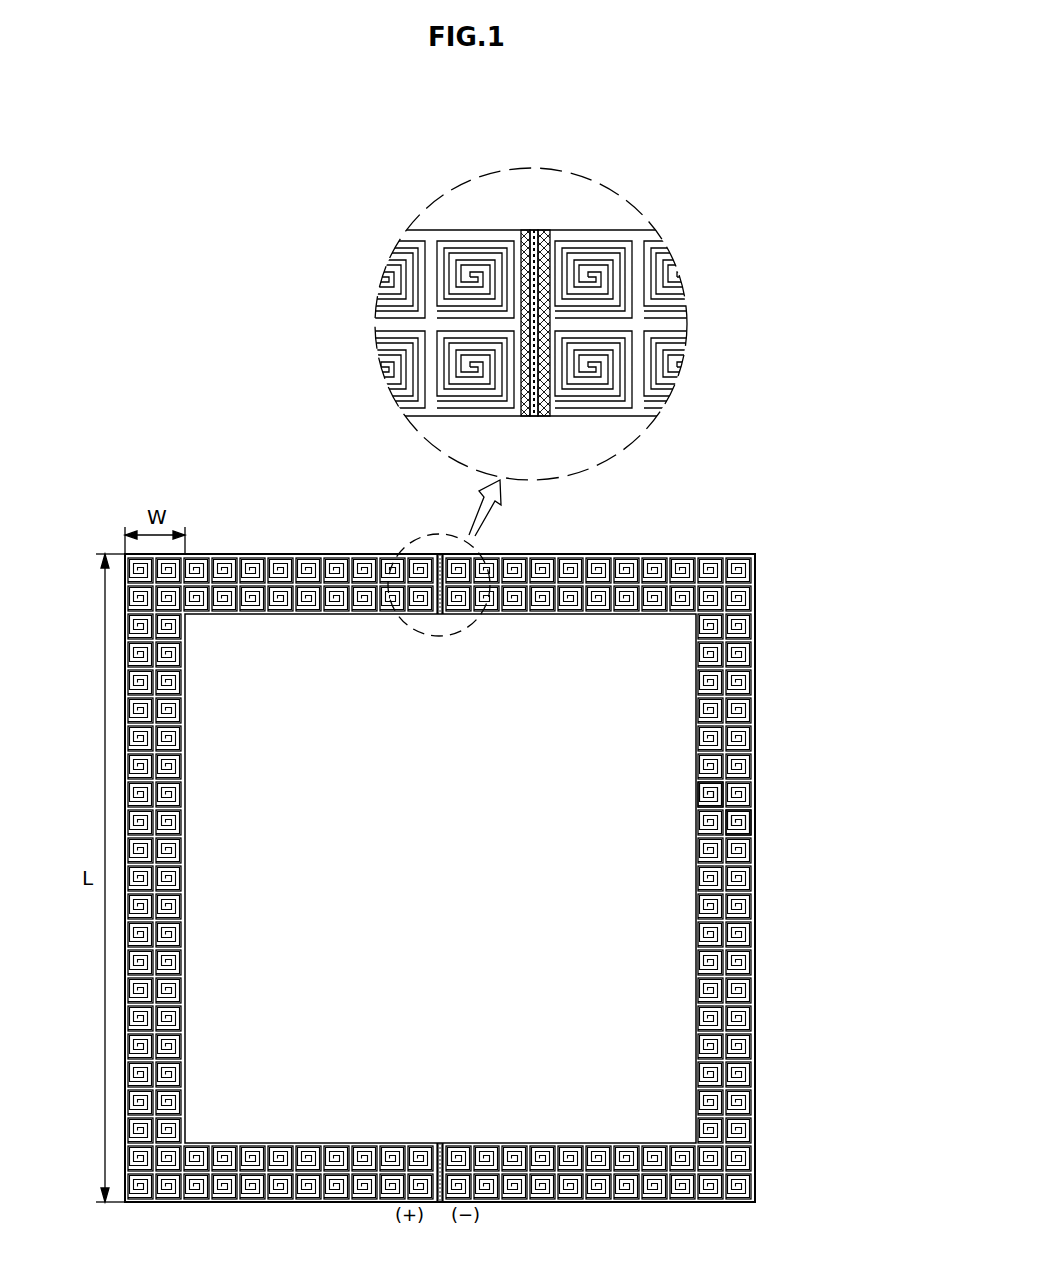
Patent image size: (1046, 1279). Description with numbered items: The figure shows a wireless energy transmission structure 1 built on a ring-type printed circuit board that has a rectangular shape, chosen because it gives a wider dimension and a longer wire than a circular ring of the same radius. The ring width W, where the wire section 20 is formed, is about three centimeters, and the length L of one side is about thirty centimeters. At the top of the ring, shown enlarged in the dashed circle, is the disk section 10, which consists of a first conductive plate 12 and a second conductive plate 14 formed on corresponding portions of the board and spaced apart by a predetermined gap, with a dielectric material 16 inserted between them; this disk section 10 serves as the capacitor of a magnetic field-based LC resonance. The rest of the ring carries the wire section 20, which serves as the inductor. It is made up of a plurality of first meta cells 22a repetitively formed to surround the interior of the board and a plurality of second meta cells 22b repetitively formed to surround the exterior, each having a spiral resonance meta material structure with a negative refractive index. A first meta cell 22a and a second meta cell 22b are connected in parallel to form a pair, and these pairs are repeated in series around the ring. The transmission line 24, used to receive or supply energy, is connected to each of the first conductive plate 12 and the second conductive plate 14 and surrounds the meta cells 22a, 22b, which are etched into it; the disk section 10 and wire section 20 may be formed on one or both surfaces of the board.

The wireless energy transmission structure 1 is at (236, 373).
The disk section 10 is at (578, 121).
The first conductive plate 12 is at (515, 222).
The second conductive plate 14 is at (536, 222).
The dielectric material 16 is at (526, 222).
The wire section 20 is at (752, 268).
The first meta cell 22a is at (620, 356).
The second meta cell 22b is at (620, 278).
The transmission line 24 is at (667, 316).